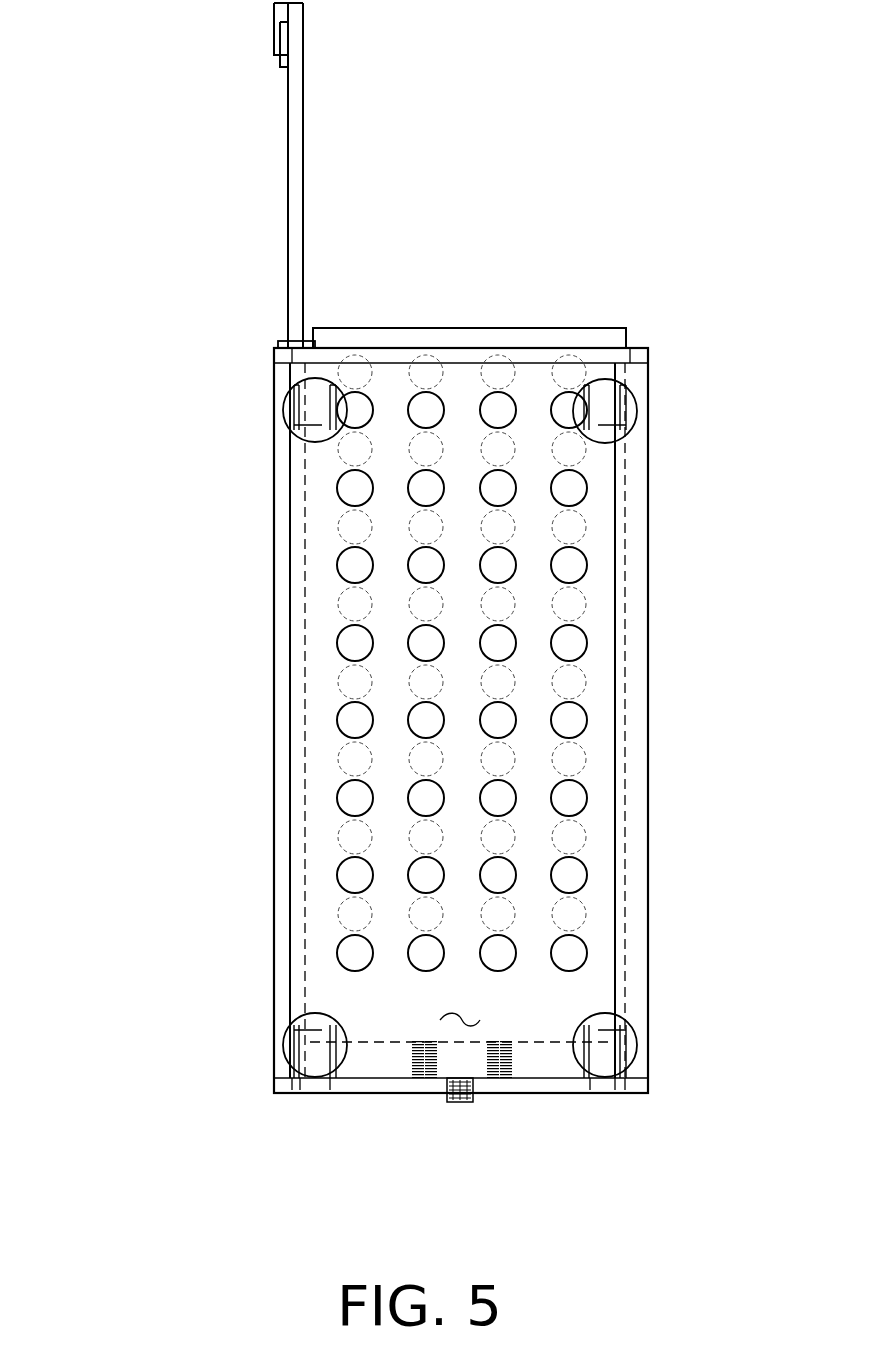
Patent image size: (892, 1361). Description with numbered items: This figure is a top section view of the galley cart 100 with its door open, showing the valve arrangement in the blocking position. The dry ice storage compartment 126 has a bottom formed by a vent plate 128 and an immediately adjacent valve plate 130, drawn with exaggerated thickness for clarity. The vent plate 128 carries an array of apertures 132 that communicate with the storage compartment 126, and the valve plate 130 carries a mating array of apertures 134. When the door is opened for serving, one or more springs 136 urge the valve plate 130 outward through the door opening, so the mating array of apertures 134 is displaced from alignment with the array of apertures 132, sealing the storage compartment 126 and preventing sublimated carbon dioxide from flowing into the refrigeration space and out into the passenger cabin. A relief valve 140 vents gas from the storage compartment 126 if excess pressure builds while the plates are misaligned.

The cart 100 is at (273, 730).
The storage compartment 126 is at (463, 1007).
The vent plate 128 is at (600, 690).
The valve plate 130 is at (488, 328).
The array of apertures 132 is at (570, 568).
The mating array of apertures 134 is at (572, 532).
The springs 136 is at (412, 1058).
The relief valve 140 is at (470, 1102).